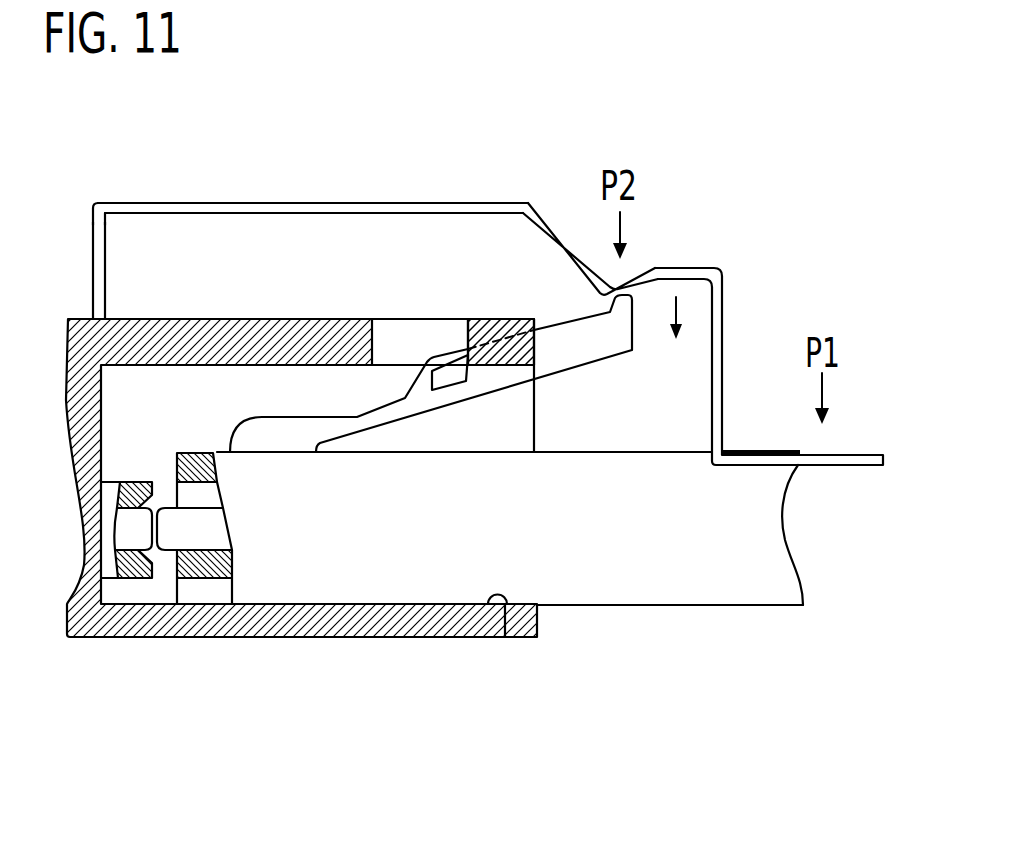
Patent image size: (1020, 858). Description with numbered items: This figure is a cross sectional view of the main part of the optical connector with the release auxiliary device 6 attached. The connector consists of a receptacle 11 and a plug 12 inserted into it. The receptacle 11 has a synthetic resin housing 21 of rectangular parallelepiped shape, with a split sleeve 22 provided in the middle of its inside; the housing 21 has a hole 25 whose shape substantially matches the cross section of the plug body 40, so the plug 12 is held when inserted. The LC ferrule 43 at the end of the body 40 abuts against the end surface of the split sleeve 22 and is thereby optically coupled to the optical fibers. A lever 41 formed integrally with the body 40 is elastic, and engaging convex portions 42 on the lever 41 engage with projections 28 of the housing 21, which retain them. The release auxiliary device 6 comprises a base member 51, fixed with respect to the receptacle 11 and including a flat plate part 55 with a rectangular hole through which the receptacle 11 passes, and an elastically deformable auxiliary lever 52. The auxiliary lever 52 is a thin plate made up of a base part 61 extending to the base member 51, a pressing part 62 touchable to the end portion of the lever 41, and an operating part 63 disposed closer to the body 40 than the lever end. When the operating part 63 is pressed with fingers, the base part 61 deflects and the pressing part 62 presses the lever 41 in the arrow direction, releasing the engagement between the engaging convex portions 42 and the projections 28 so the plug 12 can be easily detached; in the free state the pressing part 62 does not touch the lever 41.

The release auxiliary device 6 is at (400, 196).
The base member 51 is at (79, 215).
The auxiliary lever 52 is at (194, 194).
The flat plate part 55 is at (98, 260).
The base part 61 is at (305, 203).
The pressing part 62 is at (590, 293).
The operating part 63 is at (863, 453).
The receptacle 11 is at (319, 652).
The housing 21 is at (410, 638).
The split sleeve 22 is at (128, 537).
The hole 25 is at (505, 637).
The projection 28 is at (497, 320).
The body 40 is at (640, 595).
The lever 41 is at (585, 353).
The engaging convex portion 42 is at (450, 378).
The LC ferrule 43 is at (202, 533).
The plug 12 is at (742, 616).